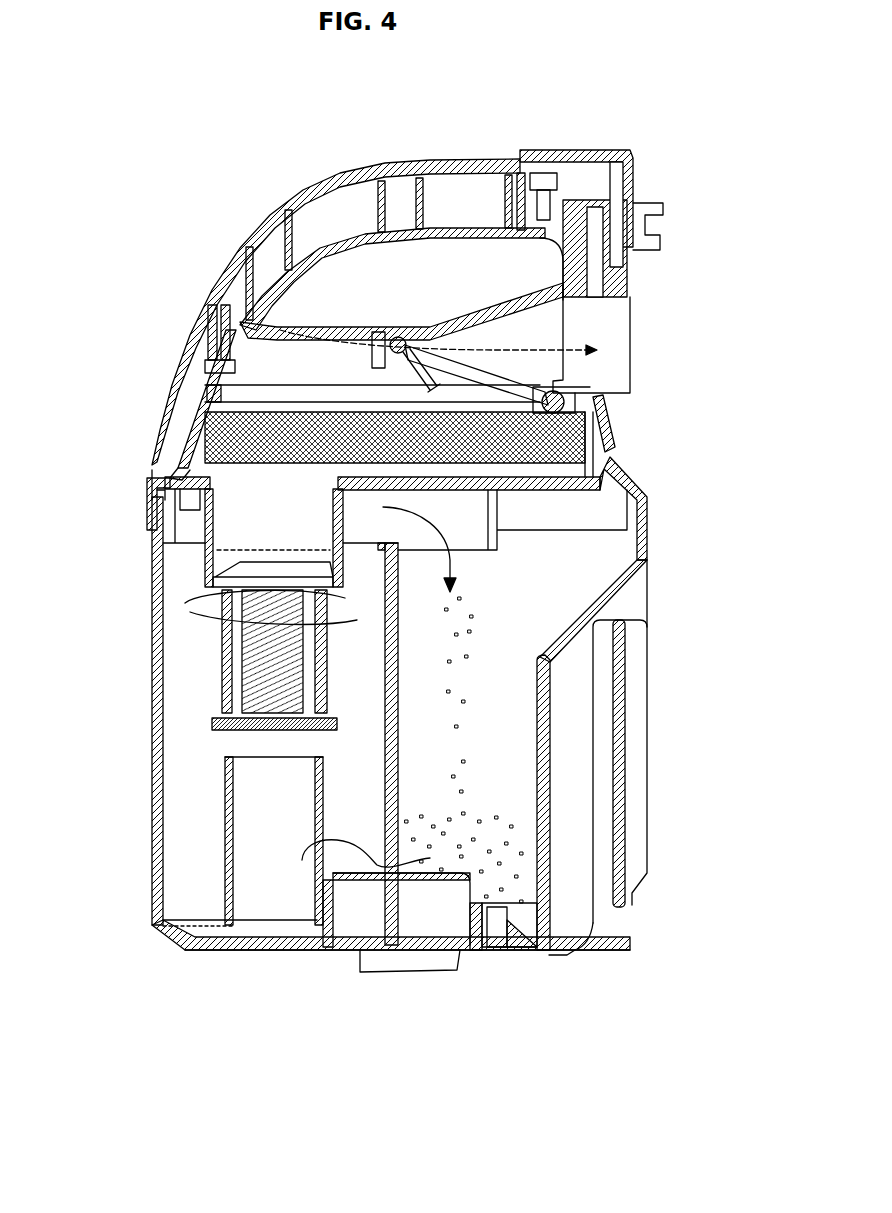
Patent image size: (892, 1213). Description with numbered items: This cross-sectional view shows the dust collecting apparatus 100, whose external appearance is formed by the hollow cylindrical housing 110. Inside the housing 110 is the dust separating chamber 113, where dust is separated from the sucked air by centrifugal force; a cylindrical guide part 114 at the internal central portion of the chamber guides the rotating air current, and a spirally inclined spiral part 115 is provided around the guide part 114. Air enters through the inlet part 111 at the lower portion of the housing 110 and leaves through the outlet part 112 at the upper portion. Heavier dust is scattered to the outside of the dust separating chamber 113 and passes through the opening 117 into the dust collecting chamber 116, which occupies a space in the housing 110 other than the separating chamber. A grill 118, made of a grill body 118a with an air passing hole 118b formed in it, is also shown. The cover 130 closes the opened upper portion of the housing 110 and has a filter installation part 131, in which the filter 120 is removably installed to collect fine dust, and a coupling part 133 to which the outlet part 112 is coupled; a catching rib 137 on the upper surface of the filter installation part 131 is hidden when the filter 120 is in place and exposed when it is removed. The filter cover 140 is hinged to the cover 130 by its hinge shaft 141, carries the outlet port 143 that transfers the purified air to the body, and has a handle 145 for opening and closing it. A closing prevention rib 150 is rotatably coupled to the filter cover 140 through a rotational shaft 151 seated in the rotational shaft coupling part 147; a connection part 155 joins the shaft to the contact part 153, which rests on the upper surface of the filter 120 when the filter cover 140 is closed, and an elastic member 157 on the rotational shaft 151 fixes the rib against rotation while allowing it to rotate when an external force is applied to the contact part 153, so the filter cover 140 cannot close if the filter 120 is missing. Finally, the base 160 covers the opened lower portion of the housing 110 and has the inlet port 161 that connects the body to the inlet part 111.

The dust collecting apparatus 100 is at (182, 141).
The housing 110 is at (152, 586).
The inlet part 111 is at (432, 915).
The outlet part 112 is at (232, 602).
The dust separating chamber 113 is at (390, 746).
The guide part 114 is at (225, 868).
The spiral part 115 is at (302, 860).
The dust collecting chamber 116 is at (500, 680).
The opening 117 is at (282, 590).
The grill 118 is at (48, 642).
The grill body 118a is at (250, 640).
The air passing hole 118b is at (270, 656).
The filter 120 is at (240, 428).
The cover 130 is at (643, 481).
The filter installation part 131 is at (163, 483).
The coupling part 133 is at (205, 517).
The catching rib 137 is at (615, 552).
The filter cover 140 is at (203, 265).
The hinge shaft 141 is at (170, 442).
The outlet port 143 is at (606, 328).
The handle 145 is at (305, 188).
The rotational shaft coupling part 147 is at (208, 312).
The closing prevention rib 150 is at (481, 378).
The rotational shaft 151 is at (404, 338).
The contact part 153 is at (578, 390).
The connection part 155 is at (270, 337).
The elastic member 157 is at (383, 333).
The base 160 is at (216, 955).
The inlet port 161 is at (404, 976).